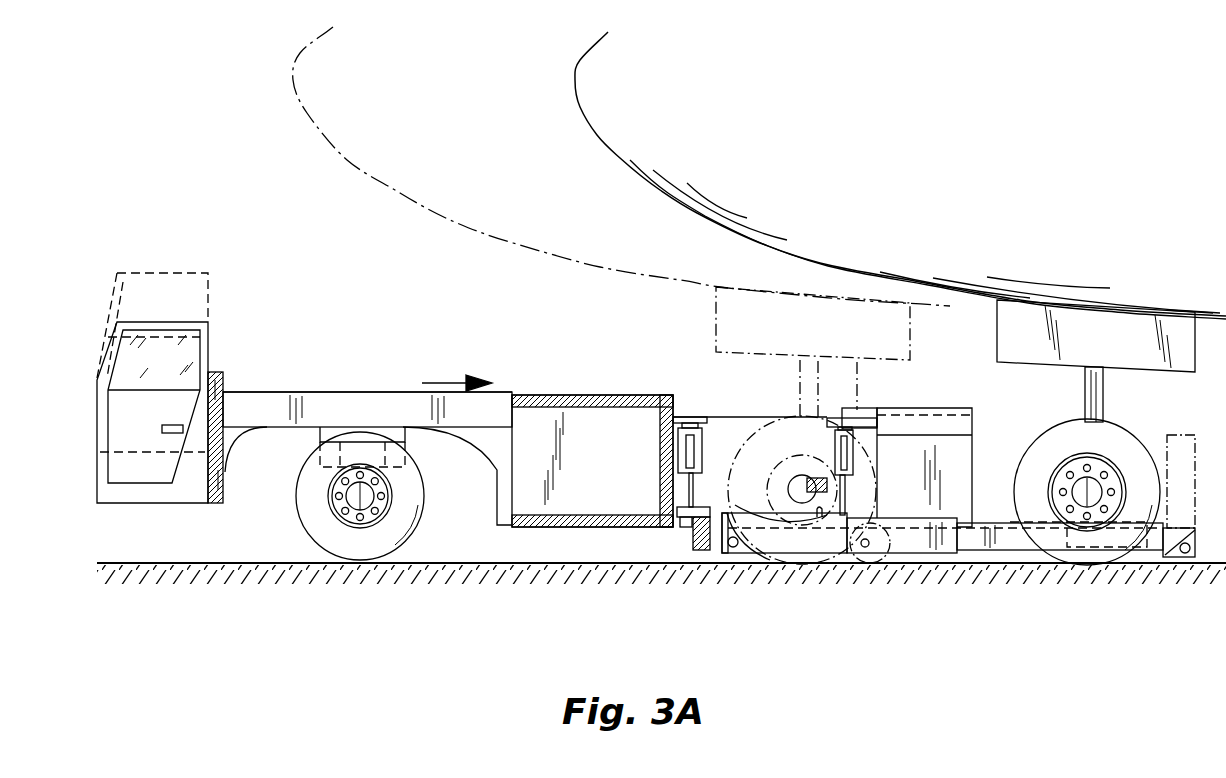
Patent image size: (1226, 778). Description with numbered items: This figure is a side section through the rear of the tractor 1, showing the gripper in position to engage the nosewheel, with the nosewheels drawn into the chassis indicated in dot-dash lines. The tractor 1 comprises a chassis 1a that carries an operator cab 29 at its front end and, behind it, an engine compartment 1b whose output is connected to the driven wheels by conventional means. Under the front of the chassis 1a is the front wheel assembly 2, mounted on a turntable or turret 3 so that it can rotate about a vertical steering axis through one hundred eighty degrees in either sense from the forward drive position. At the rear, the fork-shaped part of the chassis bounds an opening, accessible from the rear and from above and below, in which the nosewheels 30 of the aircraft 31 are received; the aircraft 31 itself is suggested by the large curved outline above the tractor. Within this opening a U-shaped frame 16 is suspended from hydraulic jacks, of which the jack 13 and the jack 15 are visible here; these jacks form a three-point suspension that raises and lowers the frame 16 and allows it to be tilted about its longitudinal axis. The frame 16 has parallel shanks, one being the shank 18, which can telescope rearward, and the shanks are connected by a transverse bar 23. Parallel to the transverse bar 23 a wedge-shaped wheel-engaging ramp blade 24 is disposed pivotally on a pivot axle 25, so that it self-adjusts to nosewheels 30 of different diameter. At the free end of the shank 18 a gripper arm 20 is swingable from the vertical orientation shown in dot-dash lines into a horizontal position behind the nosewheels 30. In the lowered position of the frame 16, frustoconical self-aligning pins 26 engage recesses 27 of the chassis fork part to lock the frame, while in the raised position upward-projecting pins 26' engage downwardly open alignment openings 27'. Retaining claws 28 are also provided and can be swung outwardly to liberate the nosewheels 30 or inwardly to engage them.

The tractor 1 is at (320, 384).
The chassis 1a is at (364, 392).
The engine compartment 1b is at (537, 500).
The front wheel assembly 2 is at (347, 503).
The turntable or turret 3 is at (405, 458).
The hydraulic jack 13 is at (684, 451).
The hydraulic jack 15 is at (853, 459).
The U-shaped frame 16 is at (811, 563).
The shank 18 is at (1004, 540).
The gripper arm 20 is at (880, 556).
The transverse bar 23 is at (703, 552).
The wheel-engaging ramp blade 24 is at (746, 550).
The pivot axle 25 is at (733, 548).
The pin 26 is at (653, 537).
The recess 27 is at (653, 537).
The pin 26' is at (777, 505).
The alignment opening 27' is at (801, 456).
The retaining claw 28 is at (940, 428).
The operator cab 29 is at (200, 347).
The nosewheel 30 is at (762, 430).
The aircraft 31 is at (500, 245).